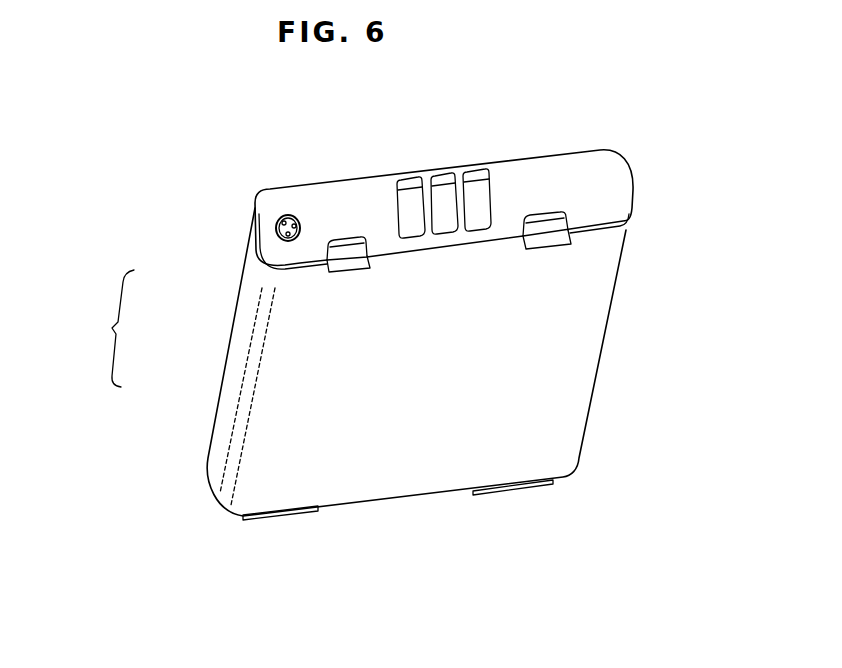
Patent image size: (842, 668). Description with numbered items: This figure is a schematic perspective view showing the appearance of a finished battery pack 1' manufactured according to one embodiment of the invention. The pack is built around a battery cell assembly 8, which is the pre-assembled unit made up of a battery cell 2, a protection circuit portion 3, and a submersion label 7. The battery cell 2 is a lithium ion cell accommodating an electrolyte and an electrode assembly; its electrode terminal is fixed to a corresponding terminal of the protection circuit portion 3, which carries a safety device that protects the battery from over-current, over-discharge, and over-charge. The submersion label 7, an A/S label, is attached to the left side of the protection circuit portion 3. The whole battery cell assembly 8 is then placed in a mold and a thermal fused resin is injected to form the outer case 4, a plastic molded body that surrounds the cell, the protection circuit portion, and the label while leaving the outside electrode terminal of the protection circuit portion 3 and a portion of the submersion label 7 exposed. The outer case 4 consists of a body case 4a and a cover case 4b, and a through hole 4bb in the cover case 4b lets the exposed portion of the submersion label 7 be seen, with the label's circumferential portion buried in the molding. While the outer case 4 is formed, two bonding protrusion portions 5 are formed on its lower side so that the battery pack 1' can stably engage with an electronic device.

The battery pack 1' is at (331, 345).
The battery cell 2 is at (281, 357).
The protection circuit portion 3 is at (270, 260).
The outer case 4 is at (262, 452).
The body case 4a is at (241, 390).
The cover case 4b is at (253, 396).
The through hole 4bb is at (294, 214).
The bonding protrusion portion 5 is at (281, 519).
The submersion label 7 is at (276, 230).
The battery cell assembly 8 is at (110, 337).